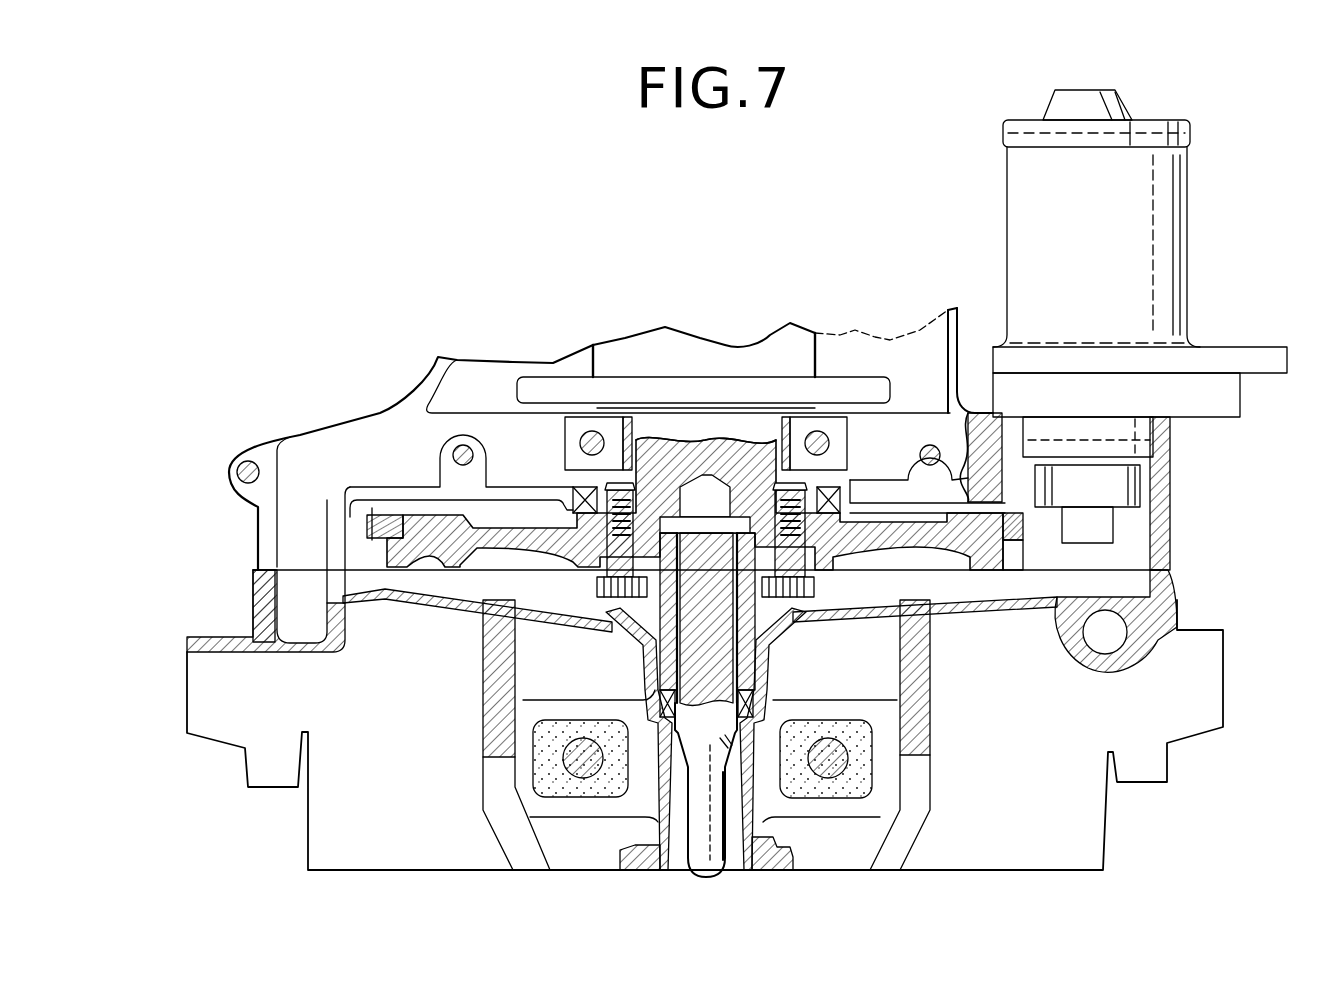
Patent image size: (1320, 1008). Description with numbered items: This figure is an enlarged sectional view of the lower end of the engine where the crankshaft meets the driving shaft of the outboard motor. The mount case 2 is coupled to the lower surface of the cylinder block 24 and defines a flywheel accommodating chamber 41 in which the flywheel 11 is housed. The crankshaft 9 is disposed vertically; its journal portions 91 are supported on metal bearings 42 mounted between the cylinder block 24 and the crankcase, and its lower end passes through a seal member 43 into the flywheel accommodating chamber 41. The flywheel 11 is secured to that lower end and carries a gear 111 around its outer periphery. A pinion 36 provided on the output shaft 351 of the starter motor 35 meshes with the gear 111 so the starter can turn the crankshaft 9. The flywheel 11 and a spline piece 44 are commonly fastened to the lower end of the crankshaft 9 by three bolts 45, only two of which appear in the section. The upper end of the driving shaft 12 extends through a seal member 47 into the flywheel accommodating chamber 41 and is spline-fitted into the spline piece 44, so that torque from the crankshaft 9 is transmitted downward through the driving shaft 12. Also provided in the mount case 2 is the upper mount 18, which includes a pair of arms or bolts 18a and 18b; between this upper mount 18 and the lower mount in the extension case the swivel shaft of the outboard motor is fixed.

The mount case 2 is at (1178, 592).
The crankshaft 9 is at (726, 342).
The journal portions 91 is at (742, 448).
The flywheel 11 is at (446, 572).
The gear 111 is at (347, 510).
The driving shaft 12 is at (690, 818).
The upper mount 18 is at (535, 795).
The arm or bolt 18a is at (828, 772).
The arm or bolt 18b is at (583, 772).
The cylinder block 24 is at (376, 411).
The starter motor 35 is at (1114, 242).
The output shaft 351 is at (1100, 528).
The pinion 36 is at (1142, 484).
The flywheel accommodating chamber 41 is at (862, 605).
The metal bearings 42 is at (630, 440).
The seal member 43 is at (840, 497).
The spline piece 44 is at (590, 580).
The bolts 45 is at (625, 625).
The seal member 47 is at (658, 700).